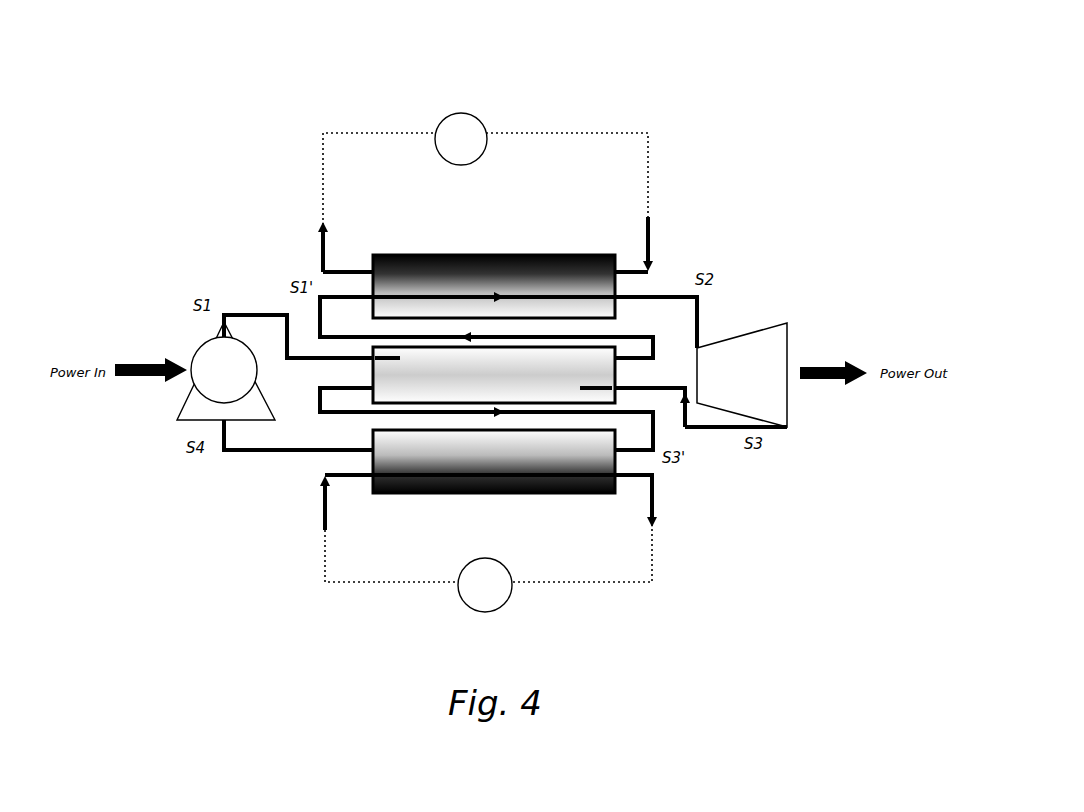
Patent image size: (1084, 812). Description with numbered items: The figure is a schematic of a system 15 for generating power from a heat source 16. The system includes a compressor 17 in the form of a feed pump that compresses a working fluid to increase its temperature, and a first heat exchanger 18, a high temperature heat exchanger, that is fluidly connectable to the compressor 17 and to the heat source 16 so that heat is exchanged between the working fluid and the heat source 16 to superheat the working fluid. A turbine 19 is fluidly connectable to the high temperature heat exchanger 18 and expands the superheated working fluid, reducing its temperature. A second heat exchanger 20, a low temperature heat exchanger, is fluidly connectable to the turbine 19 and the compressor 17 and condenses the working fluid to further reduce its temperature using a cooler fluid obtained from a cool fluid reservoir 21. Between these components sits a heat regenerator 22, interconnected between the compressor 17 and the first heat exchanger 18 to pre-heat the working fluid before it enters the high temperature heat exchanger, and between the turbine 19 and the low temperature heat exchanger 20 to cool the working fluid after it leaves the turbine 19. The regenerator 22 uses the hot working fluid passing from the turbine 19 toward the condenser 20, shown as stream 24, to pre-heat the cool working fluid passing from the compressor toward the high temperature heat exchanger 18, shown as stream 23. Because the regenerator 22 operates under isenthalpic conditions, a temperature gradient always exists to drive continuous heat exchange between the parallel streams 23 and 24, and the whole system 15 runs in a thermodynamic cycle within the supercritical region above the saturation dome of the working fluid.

The system 15 is at (768, 105).
The heat source 16 is at (475, 114).
The compressor 17 is at (193, 386).
The first heat exchanger 18 is at (466, 251).
The turbine 19 is at (753, 330).
The second heat exchanger 20 is at (463, 493).
The cool fluid reservoir 21 is at (510, 602).
The heat regenerator 22 is at (600, 347).
The stream 23 is at (403, 363).
The stream 24 is at (573, 383).